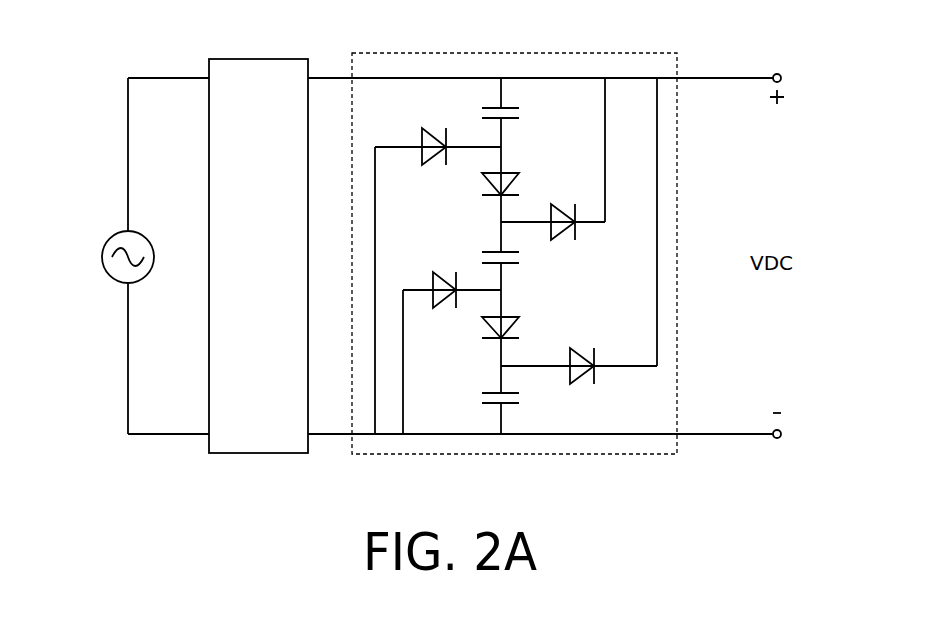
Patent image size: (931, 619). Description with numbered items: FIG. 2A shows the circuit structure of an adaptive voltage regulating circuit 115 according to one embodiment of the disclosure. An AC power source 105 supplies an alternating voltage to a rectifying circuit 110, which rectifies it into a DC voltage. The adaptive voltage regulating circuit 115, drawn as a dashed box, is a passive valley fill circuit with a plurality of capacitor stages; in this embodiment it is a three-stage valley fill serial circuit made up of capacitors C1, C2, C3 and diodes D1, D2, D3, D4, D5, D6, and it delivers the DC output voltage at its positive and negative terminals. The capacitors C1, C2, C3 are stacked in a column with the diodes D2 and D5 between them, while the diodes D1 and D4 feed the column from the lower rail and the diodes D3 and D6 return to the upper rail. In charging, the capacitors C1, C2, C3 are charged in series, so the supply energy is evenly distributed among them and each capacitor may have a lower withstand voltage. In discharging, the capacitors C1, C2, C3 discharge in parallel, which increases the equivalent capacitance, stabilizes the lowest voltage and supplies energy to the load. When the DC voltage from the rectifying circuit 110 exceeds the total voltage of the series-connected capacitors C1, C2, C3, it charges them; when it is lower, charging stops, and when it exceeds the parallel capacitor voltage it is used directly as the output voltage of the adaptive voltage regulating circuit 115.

The AC power source 105 is at (110, 278).
The rectifying circuit 110 is at (272, 185).
The adaptive voltage regulating circuit 115 is at (608, 53).
The capacitor C1 is at (517, 115).
The capacitor C2 is at (517, 261).
The capacitor C3 is at (481, 403).
The diode D1 is at (438, 268).
The diode D2 is at (482, 186).
The diode D3 is at (553, 159).
The diode D4 is at (452, 339).
The diode D5 is at (481, 332).
The diode D6 is at (579, 231).